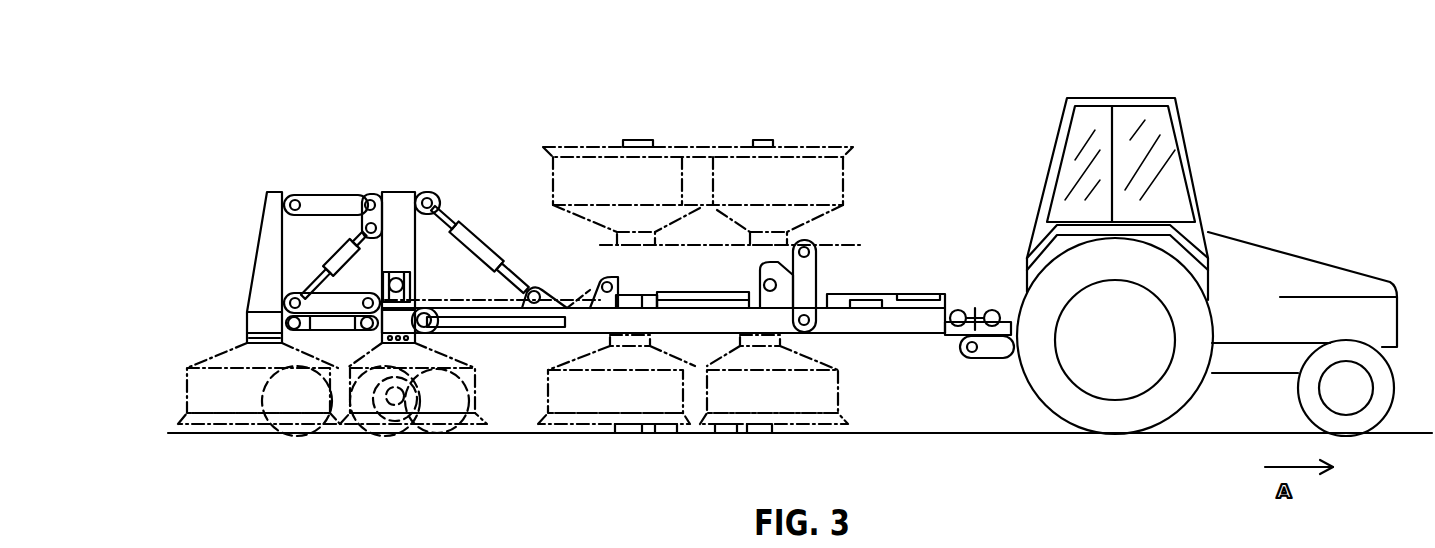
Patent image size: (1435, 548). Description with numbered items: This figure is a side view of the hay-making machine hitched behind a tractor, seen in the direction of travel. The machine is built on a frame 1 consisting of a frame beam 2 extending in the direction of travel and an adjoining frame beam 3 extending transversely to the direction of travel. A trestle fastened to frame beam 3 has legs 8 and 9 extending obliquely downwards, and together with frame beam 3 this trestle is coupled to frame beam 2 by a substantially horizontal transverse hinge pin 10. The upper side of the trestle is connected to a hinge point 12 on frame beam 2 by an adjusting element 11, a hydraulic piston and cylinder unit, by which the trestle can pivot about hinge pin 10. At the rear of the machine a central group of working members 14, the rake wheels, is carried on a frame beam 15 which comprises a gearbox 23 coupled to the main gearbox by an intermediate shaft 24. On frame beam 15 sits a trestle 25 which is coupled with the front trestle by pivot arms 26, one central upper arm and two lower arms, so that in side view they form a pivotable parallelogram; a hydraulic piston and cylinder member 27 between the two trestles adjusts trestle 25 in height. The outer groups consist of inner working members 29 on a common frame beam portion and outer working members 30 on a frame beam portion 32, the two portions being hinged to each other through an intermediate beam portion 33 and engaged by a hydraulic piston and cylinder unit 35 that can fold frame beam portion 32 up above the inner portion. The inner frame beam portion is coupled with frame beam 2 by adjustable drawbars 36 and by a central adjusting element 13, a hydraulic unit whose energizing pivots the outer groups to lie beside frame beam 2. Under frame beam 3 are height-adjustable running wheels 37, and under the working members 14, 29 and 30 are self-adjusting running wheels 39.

The frame 1 is at (536, 245).
The frame beam 2 is at (890, 333).
The frame beam 3 is at (398, 343).
The leg 8 is at (400, 206).
The leg 9 is at (262, 233).
The hinge pin 10 is at (428, 318).
The adjusting element 11 is at (476, 245).
The hinge point 12 is at (540, 298).
The central adjusting element 13 is at (920, 293).
The working member 14 is at (225, 413).
The frame beam 15 is at (243, 318).
The gearbox 23 is at (262, 326).
The intermediate shaft 24 is at (316, 327).
The trestle 25 is at (315, 252).
The pivot arm 26 is at (353, 198).
The hydraulic piston and cylinder member 27 is at (347, 248).
The inner working member 29 is at (667, 437).
The outer working member 30 is at (683, 142).
The frame beam portion 32 is at (710, 216).
The intermediate beam portion 33 is at (820, 270).
The hydraulic piston and cylinder unit 35 is at (406, 275).
The adjustable drawbar 36 is at (497, 312).
The running wheel 37 is at (380, 434).
The self-adjusting running wheel 39 is at (636, 139).